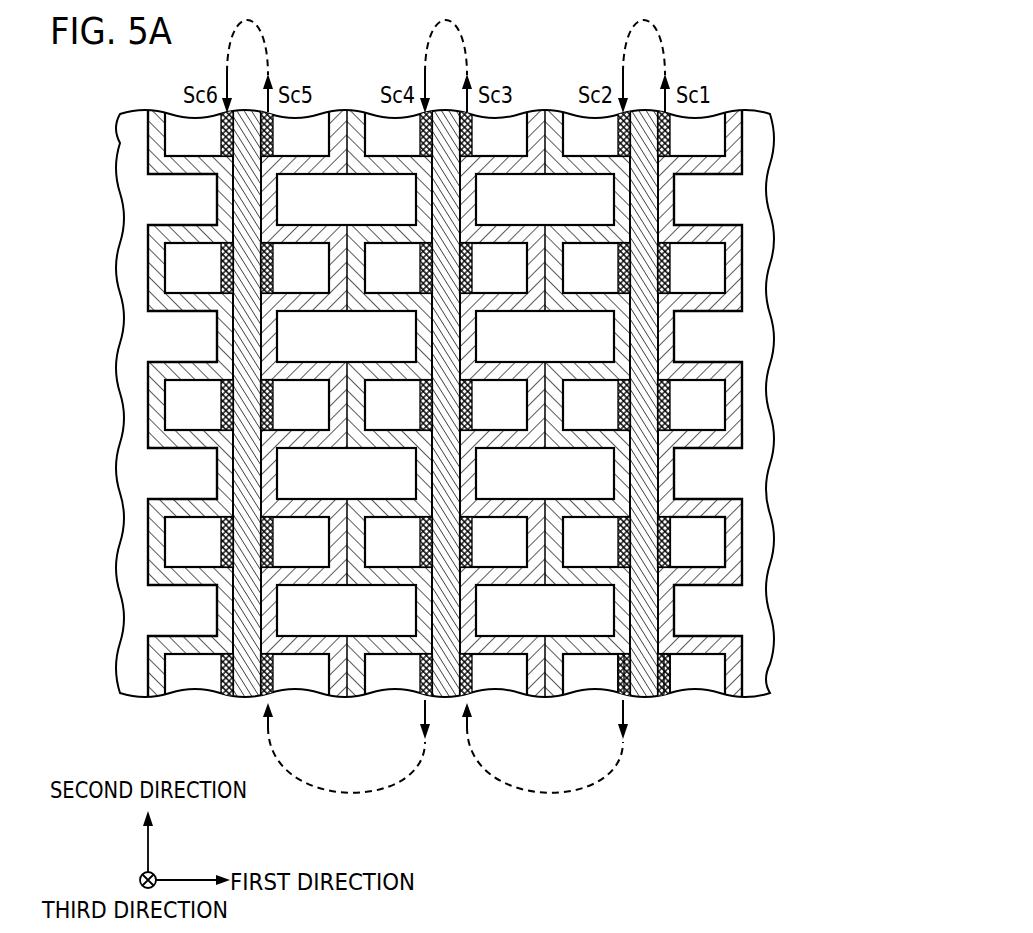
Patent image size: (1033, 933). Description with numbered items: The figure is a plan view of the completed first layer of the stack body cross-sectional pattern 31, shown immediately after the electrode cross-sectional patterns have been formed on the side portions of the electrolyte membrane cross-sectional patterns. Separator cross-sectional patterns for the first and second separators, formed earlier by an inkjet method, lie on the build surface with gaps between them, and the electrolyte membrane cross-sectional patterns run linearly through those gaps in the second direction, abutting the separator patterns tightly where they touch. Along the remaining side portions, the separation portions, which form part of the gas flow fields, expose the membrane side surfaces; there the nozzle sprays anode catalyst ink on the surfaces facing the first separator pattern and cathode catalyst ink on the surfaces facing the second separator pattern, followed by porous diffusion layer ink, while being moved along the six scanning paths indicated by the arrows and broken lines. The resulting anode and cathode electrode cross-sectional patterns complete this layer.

The stack body cross-sectional pattern 31 is at (122, 94).